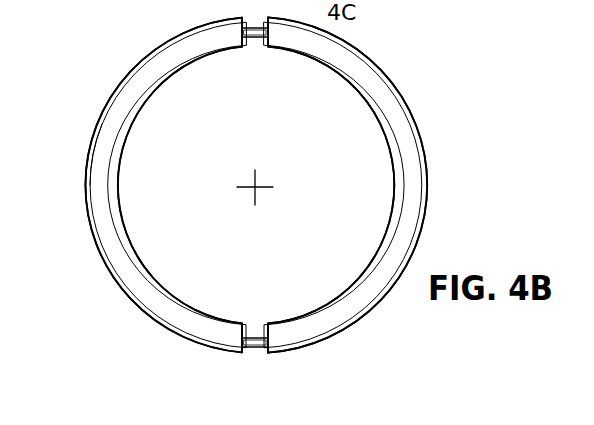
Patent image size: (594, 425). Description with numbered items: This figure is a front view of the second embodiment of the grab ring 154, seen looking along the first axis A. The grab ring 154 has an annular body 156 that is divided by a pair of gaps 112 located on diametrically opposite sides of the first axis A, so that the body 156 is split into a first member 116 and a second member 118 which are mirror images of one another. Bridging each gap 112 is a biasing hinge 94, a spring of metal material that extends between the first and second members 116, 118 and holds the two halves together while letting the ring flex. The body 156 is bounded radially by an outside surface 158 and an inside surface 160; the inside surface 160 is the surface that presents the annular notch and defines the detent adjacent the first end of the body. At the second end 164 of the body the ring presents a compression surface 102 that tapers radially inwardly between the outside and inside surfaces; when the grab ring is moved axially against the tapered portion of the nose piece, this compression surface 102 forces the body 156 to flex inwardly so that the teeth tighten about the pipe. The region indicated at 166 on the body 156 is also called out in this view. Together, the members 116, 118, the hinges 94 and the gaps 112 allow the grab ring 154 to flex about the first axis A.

The biasing hinge 94 is at (257, 24).
The compression surface 102 is at (139, 104).
The gap 112 is at (262, 47).
The first member 116 is at (124, 82).
The second member 118 is at (407, 105).
The grab ring 154 is at (392, 77).
The body 156 is at (94, 124).
The inner wall 158 is at (415, 128).
The inside surface 160 is at (384, 166).
The inner surface 164 is at (175, 70).
The slot 166 is at (128, 222).
The first axis A is at (255, 187).